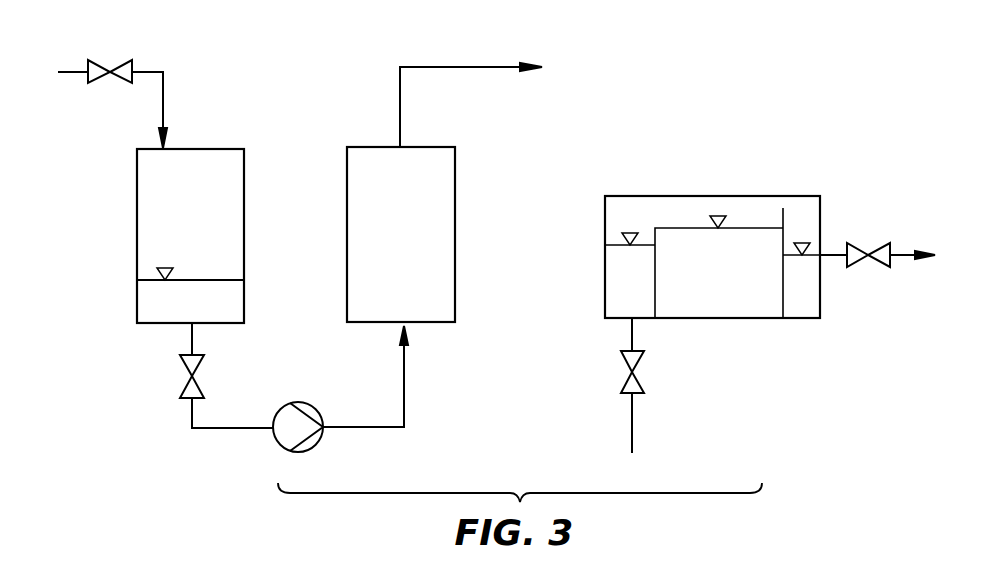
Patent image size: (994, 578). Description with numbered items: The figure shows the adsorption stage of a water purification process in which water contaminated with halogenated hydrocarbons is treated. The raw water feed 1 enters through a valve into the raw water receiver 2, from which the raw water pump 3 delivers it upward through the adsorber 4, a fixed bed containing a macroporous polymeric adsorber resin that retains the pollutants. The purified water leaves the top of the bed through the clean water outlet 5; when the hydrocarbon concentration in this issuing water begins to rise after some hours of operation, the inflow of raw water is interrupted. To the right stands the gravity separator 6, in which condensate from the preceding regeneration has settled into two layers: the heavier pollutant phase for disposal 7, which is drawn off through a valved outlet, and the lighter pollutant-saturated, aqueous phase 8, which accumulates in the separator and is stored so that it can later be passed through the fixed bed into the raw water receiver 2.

The raw water feed 1 is at (163, 87).
The raw water receiver 2 is at (244, 207).
The raw water pump 3 is at (302, 403).
The adsorber 4 is at (452, 203).
The clean water outlet 5 is at (461, 67).
The gravity separator 6 is at (720, 196).
The pollutant phase for disposal 7 is at (835, 257).
The pollutant-saturated, aqueous phase 8 is at (632, 433).